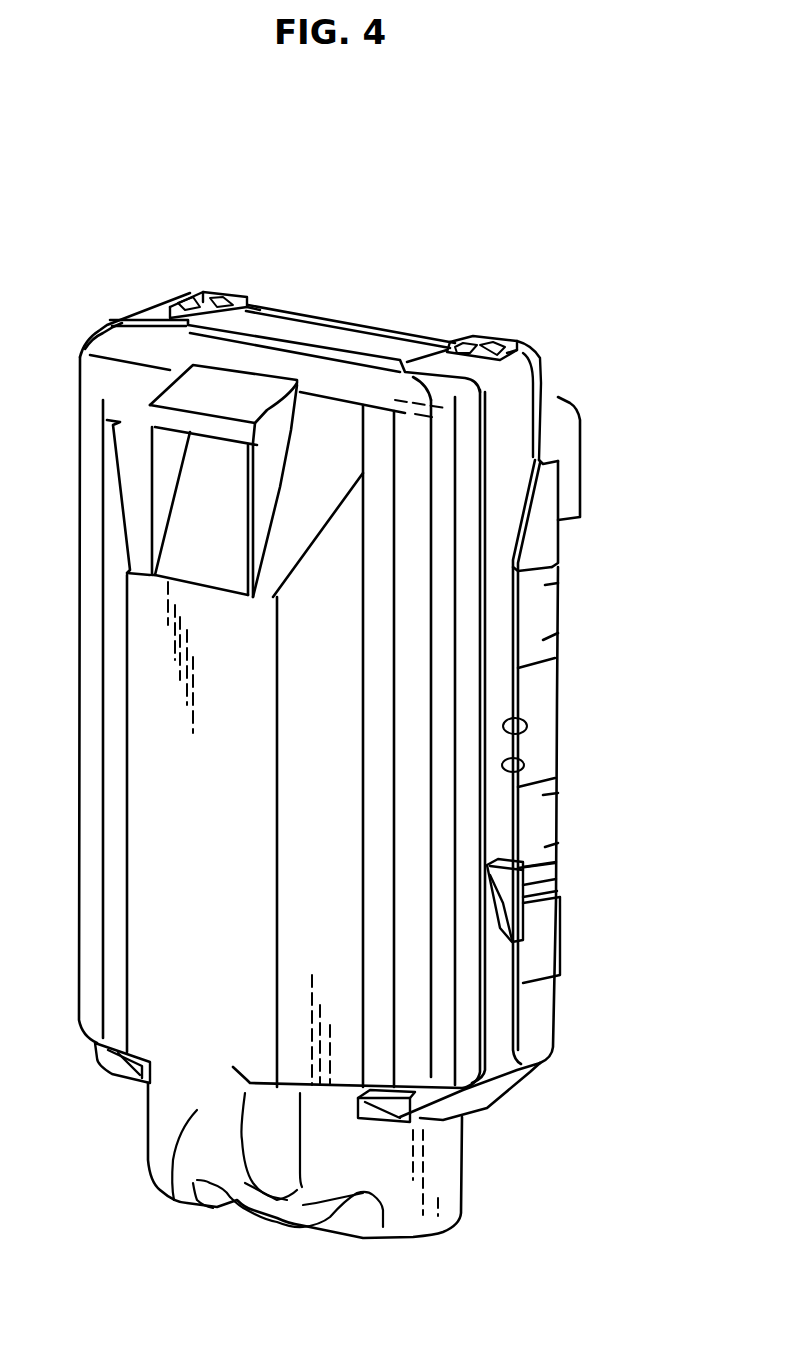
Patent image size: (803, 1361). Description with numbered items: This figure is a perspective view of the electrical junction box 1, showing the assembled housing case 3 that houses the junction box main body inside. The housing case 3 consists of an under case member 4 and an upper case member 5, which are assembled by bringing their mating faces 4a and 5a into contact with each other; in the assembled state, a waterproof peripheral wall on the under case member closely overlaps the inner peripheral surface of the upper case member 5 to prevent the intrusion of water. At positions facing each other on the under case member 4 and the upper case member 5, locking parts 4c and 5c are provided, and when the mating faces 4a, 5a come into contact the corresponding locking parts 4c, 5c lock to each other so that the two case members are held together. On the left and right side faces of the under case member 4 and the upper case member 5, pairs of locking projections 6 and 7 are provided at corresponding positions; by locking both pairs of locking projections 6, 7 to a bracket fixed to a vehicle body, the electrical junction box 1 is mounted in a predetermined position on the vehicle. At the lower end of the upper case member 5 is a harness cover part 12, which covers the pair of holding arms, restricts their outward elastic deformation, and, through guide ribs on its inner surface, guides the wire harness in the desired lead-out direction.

The electrical junction box 1 is at (350, 272).
The housing case 3 is at (632, 587).
The under case member 4 is at (537, 612).
The mating face of the under case member 4a is at (505, 758).
The locking part of the under case member 4c is at (210, 297).
The upper case member 5 is at (467, 687).
The mating face of the upper case member 5a is at (523, 722).
The locking part of the upper case member 5c is at (188, 293).
The locking projection 6 is at (547, 913).
The locking projection 7 is at (512, 883).
The harness cover part 12 is at (175, 1195).